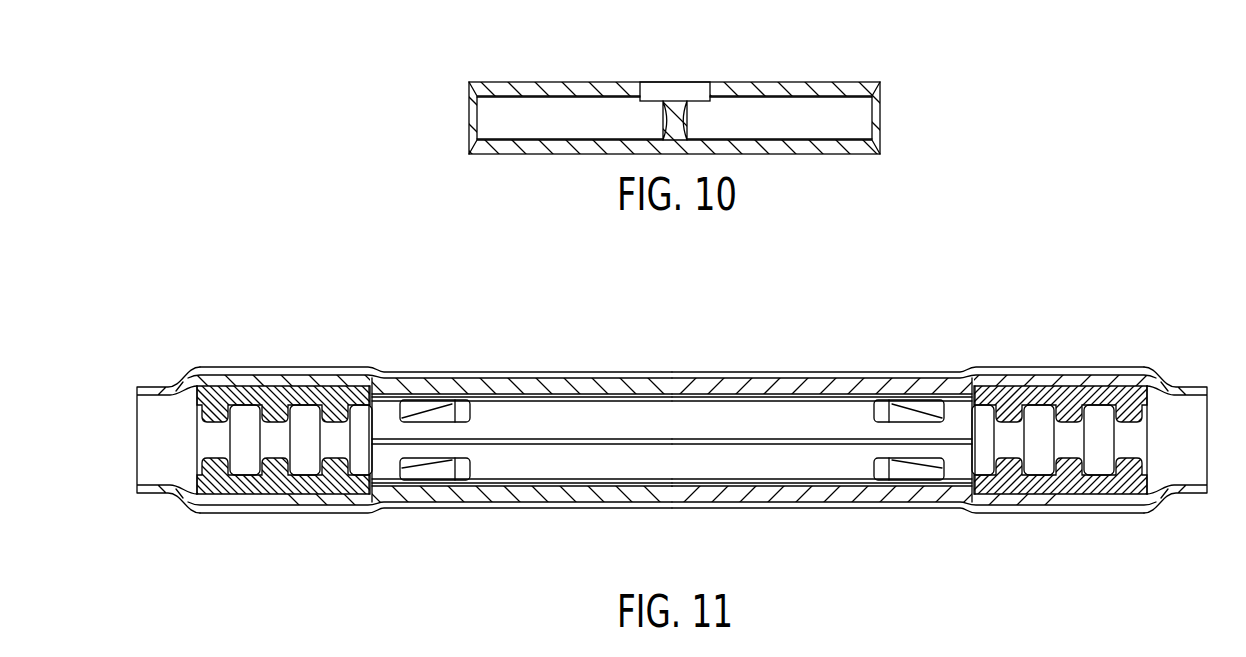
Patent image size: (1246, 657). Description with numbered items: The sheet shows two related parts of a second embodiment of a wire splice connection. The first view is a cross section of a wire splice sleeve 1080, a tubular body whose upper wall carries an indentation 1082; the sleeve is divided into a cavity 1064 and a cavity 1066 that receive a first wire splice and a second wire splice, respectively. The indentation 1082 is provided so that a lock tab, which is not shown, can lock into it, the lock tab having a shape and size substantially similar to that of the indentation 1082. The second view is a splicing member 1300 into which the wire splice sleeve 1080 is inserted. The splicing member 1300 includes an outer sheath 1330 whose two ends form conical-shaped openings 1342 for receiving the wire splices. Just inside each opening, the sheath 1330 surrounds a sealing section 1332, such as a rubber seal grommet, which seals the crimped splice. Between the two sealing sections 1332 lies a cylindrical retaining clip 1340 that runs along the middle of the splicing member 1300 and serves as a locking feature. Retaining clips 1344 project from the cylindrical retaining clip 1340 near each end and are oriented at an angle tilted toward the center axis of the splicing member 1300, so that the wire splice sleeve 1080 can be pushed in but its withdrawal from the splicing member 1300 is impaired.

In FIG. 10, the wire splice sleeve 1080 is at (478, 82).
In FIG. 10, the indentation 1082 is at (640, 75).
In FIG. 10, the cavity 1066 is at (488, 118).
In FIG. 10, the cavity 1064 is at (857, 113).
In FIG. 11, the splicing member 1300 is at (651, 429).
In FIG. 11, the sheath 1330 is at (376, 368).
In FIG. 11, the sealing sections 1332 is at (198, 525).
In FIG. 11, the cylindrical retaining clip 1340 is at (568, 472).
In FIG. 11, the conical-shaped openings 1342 is at (138, 525).
In FIG. 11, the retaining clips 1344 is at (450, 415).